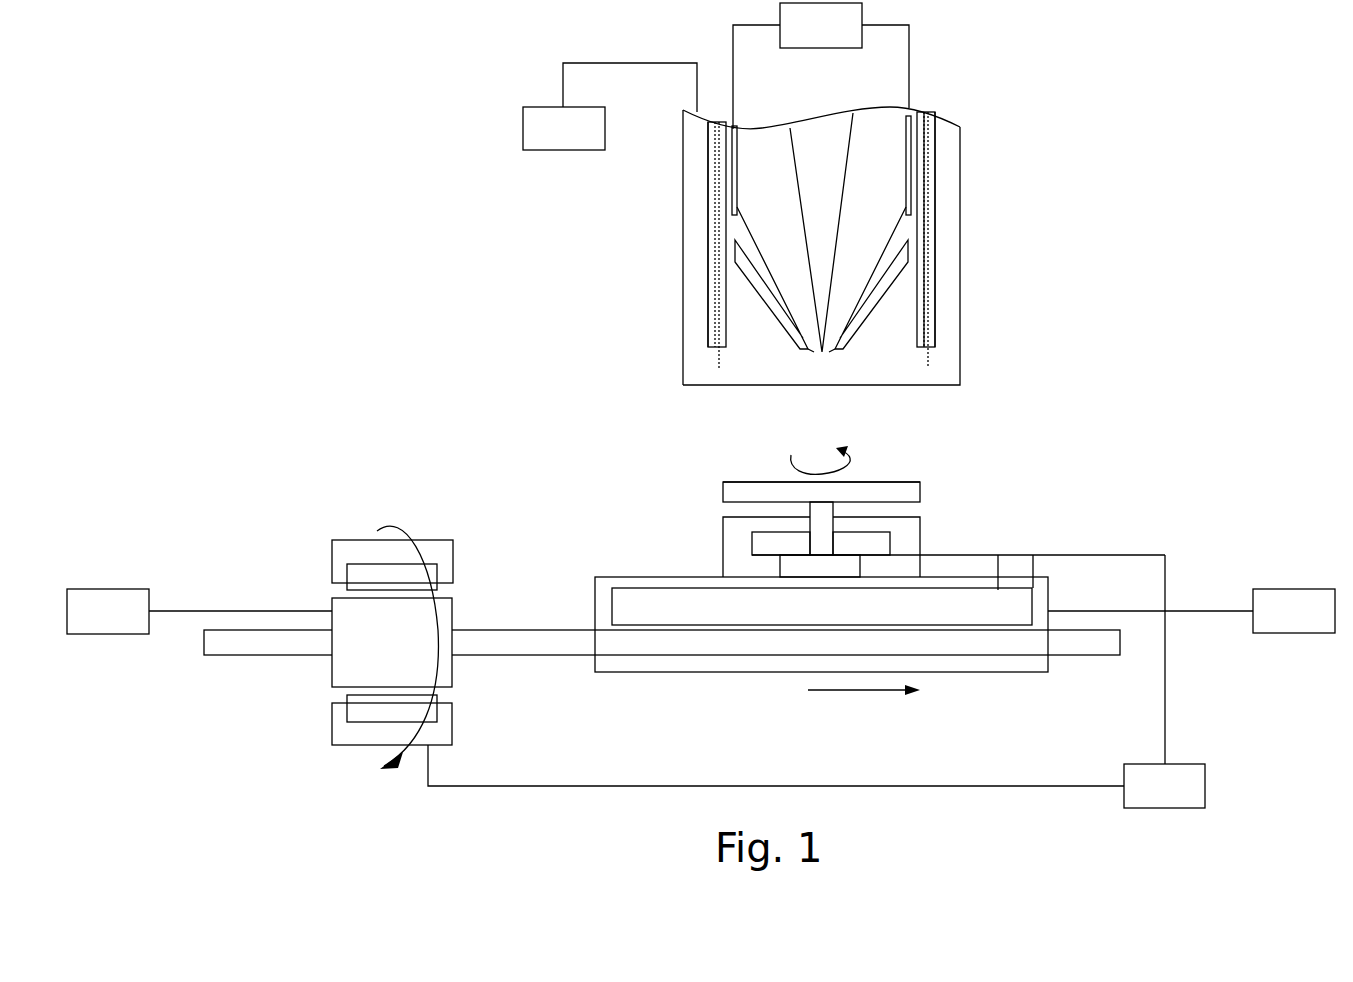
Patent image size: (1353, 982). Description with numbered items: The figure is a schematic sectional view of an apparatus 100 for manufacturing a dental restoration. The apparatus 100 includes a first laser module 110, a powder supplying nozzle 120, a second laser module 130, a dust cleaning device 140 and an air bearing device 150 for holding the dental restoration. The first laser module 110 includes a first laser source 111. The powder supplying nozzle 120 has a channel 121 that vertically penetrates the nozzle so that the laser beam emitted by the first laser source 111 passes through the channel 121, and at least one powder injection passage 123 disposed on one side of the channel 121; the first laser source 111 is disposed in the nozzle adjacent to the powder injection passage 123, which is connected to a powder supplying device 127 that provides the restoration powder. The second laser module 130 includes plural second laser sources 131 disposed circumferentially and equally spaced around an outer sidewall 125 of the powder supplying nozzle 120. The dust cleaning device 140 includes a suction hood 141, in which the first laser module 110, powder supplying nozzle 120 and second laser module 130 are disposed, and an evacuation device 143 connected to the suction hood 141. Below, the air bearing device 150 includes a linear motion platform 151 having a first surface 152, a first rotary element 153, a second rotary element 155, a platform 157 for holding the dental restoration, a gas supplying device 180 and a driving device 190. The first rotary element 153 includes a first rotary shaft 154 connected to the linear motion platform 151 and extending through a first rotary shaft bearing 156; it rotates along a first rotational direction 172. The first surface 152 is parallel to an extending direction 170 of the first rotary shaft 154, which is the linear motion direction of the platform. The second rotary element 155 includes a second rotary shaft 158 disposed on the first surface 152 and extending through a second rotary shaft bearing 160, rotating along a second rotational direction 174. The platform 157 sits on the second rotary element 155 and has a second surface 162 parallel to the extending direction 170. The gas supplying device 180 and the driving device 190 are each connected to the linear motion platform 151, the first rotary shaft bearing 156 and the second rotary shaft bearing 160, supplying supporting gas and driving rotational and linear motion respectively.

The apparatus 100 is at (270, 138).
The first laser module 110 is at (1056, 90).
The first laser source 111 is at (835, 145).
The powder supplying nozzle 120 is at (598, 227).
The channel 121 is at (780, 240).
The powder injection passage 123 is at (743, 228).
The outer sidewall 125 is at (857, 327).
The powder supplying device 127 is at (842, 39).
The second laser module 130 is at (707, 337).
The second laser sources 131 is at (925, 202).
The dust cleaning device 140 is at (420, 113).
The suction hood 141 is at (690, 200).
The evacuation device 143 is at (532, 127).
The air bearing device 150 is at (333, 498).
The linear motion platform 151 is at (1033, 582).
The first surface 152 is at (965, 577).
The first rotary element 153 is at (557, 462).
The first rotary shaft 154 is at (535, 645).
The second rotary element 155 is at (630, 455).
The first rotary shaft bearing 156 is at (437, 617).
The platform 157 is at (910, 492).
The second rotary shaft 158 is at (820, 510).
The second rotary shaft bearing 160 is at (767, 543).
The second surface 162 is at (757, 482).
The extending direction 170 is at (848, 697).
The first rotational direction 172 is at (397, 520).
The second rotational direction 174 is at (822, 474).
The gas supplying device 180 is at (1186, 801).
The driving device 190 is at (790, 565).